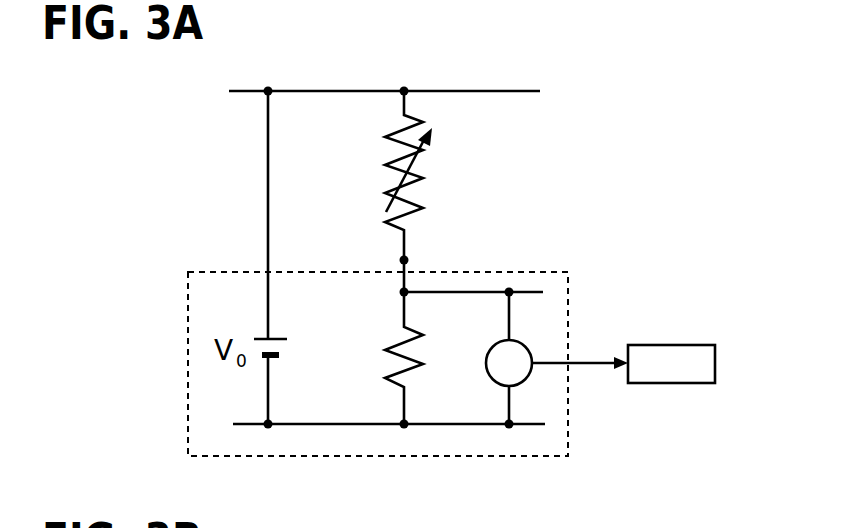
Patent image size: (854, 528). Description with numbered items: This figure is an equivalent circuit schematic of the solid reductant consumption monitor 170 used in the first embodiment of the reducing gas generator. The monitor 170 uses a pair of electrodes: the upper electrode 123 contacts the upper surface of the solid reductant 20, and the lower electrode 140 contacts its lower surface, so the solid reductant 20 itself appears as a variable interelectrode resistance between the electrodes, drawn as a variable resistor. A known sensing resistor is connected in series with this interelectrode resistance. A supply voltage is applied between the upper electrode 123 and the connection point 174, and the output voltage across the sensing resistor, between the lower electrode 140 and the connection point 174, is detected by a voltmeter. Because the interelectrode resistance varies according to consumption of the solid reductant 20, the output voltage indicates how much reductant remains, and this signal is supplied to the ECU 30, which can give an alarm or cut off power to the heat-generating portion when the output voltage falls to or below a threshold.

The upper electrode 123 is at (404, 91).
The solid reductant 20 is at (434, 175).
The lower electrode 140 is at (404, 259).
The solid reductant consumption monitor 170 is at (575, 268).
The ECU 30 is at (693, 345).
The connection point 174 is at (404, 424).